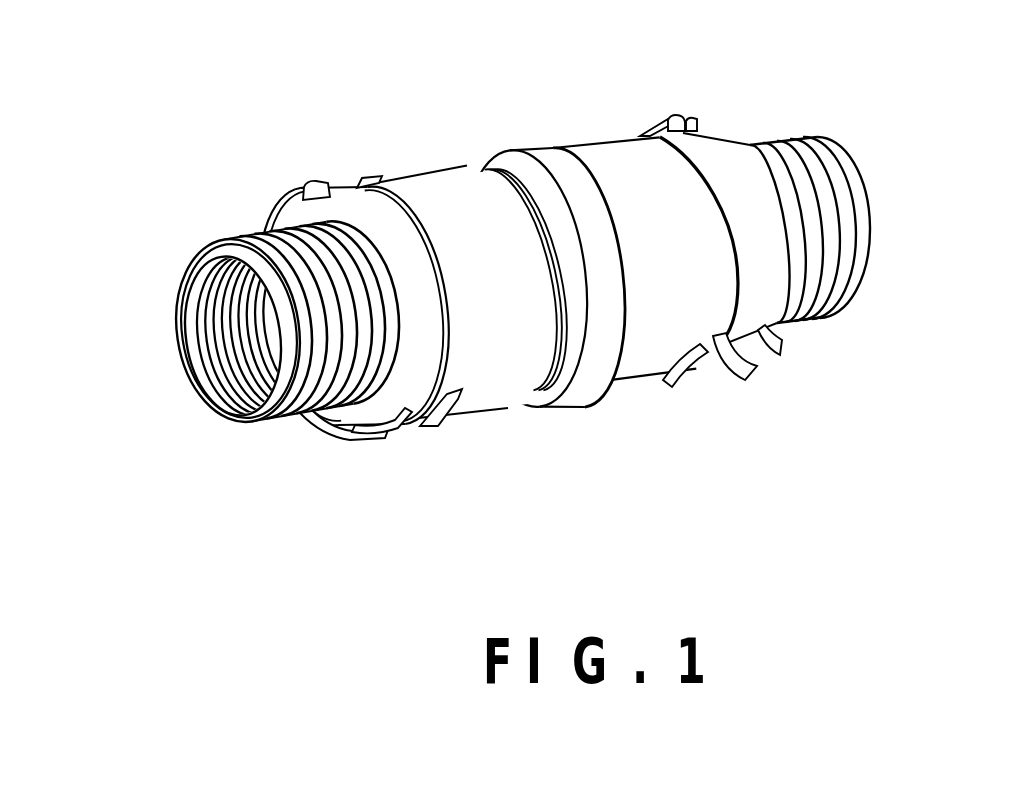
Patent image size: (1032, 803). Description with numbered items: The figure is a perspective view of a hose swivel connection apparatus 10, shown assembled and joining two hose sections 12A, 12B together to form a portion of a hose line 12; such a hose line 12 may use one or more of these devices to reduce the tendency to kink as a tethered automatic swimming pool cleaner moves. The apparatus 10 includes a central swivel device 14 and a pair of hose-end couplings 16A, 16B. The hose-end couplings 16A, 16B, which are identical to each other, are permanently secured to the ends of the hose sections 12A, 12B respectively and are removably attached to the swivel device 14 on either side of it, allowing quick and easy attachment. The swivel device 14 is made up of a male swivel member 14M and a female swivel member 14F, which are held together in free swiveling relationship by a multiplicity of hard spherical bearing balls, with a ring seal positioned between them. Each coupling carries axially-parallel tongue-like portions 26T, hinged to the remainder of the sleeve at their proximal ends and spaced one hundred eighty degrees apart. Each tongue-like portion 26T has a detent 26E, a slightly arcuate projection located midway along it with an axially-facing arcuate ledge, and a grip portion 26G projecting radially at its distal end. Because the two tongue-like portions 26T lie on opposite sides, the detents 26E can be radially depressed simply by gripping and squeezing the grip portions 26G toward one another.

The hose swivel connection apparatus 10 is at (573, 294).
The hose line 12 is at (841, 226).
The hose section 12A is at (224, 225).
The hose section 12B is at (822, 323).
The swivel device 14 is at (530, 296).
The male swivel member 14M is at (486, 377).
The female swivel member 14F is at (641, 363).
The hose-end coupling 16A is at (354, 290).
The hose-end coupling 16B is at (722, 160).
The grip portion 26G is at (327, 190).
The detent 26E is at (437, 425).
The tongue-like portion 26T is at (744, 368).